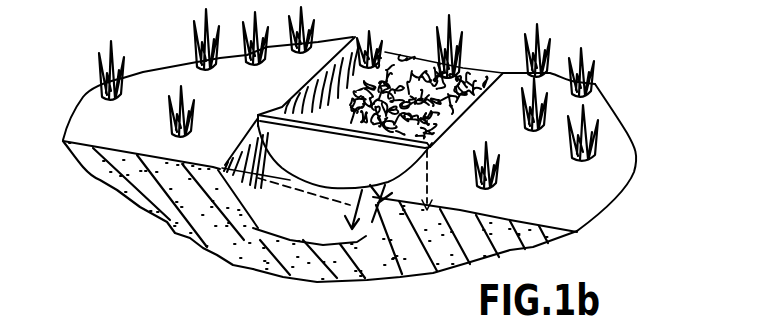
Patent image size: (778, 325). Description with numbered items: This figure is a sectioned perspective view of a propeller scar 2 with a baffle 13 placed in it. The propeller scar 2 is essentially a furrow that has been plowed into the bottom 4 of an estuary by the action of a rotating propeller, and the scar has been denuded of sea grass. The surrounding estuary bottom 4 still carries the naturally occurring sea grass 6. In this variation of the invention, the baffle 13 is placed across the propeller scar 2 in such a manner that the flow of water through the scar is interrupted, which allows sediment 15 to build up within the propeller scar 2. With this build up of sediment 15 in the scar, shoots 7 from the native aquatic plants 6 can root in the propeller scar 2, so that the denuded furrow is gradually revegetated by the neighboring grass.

The propeller scar 2 is at (243, 257).
The estuary bottom 4 is at (133, 203).
The sea grass 6 is at (110, 75).
The shoots 7 is at (380, 58).
The baffle 13 is at (352, 160).
The sediment 15 is at (414, 60).